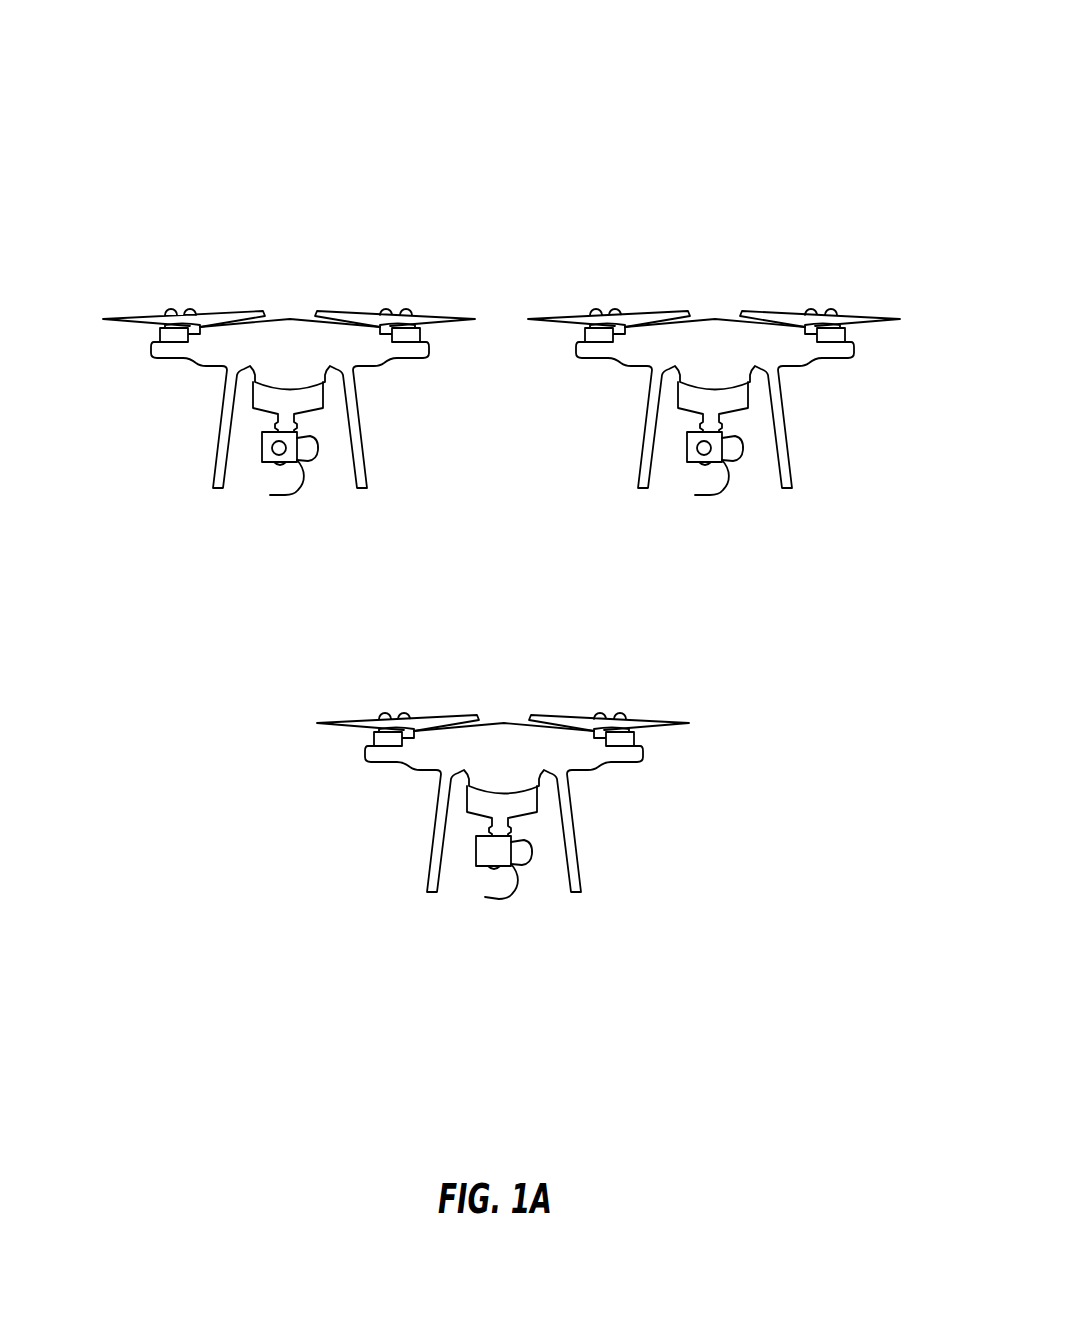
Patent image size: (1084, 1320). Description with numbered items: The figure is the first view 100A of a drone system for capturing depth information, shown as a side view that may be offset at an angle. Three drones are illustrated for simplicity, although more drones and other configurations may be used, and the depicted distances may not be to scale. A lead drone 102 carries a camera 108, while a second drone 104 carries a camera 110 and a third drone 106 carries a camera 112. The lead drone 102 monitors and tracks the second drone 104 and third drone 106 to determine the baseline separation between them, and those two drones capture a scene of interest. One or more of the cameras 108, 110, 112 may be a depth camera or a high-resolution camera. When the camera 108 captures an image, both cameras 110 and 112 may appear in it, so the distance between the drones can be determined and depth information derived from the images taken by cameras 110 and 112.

The first view 100A is at (785, 62).
The lead drone 102 is at (503, 810).
The second drone 104 is at (289, 407).
The third drone 106 is at (714, 408).
The camera 108 is at (490, 872).
The camera 110 is at (276, 469).
The camera 112 is at (702, 470).